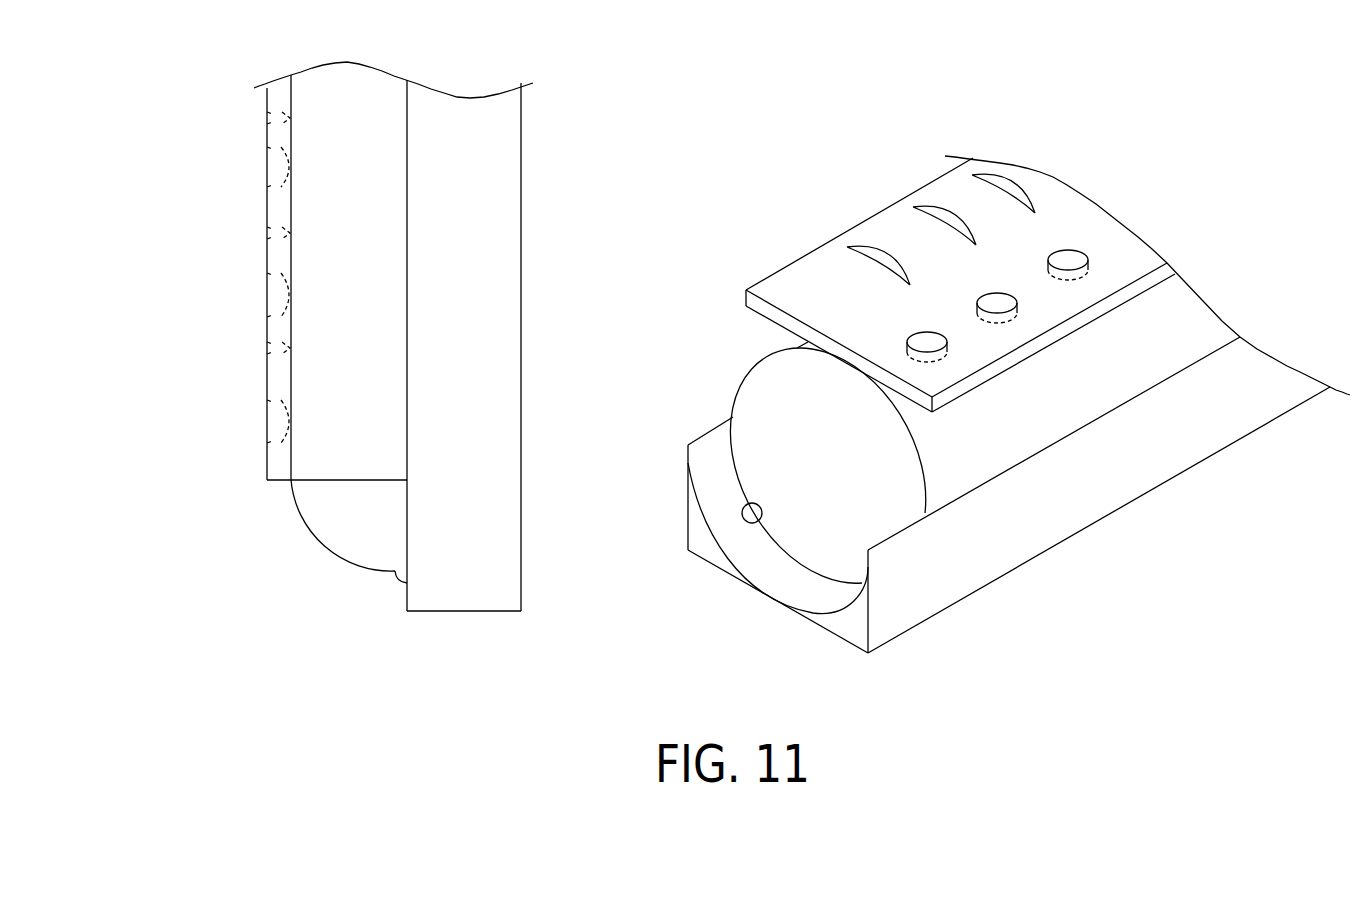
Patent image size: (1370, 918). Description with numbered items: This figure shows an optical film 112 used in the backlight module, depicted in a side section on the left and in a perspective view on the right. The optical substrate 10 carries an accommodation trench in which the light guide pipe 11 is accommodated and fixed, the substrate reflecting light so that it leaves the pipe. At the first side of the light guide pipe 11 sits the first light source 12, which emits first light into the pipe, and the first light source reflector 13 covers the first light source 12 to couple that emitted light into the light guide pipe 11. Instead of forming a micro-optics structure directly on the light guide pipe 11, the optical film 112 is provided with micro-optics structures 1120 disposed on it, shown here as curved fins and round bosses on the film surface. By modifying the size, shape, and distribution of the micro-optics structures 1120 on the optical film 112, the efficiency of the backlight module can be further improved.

The optical substrate 10 is at (521, 297).
The light guide pipe 11 is at (373, 97).
The first light source 12 is at (397, 575).
The first light source reflector 13 is at (333, 508).
The optical film 112 is at (276, 97).
The micro-optics structures 1120 is at (283, 186).